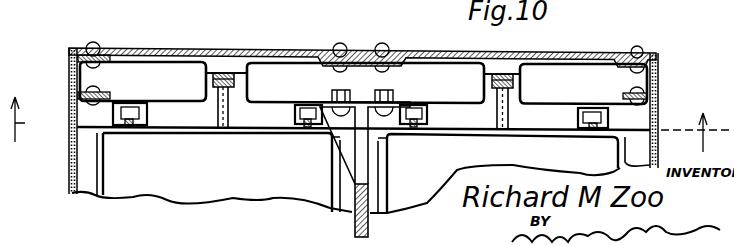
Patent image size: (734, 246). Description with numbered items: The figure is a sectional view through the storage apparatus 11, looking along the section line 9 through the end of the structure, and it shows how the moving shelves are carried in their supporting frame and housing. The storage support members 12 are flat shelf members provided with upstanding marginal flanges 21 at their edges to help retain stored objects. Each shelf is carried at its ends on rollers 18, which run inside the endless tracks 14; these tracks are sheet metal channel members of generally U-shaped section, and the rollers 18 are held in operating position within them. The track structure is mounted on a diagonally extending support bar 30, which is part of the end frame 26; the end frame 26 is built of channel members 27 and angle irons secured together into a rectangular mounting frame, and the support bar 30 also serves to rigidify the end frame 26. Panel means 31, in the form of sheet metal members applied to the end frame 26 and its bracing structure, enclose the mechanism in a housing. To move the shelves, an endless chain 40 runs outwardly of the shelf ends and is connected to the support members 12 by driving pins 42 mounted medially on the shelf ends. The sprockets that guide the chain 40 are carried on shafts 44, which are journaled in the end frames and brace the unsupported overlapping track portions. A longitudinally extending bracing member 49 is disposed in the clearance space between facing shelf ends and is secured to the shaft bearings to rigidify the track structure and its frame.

The section line 9 is at (369, 129).
The storage apparatus 11 is at (671, 95).
The storage support member 12 is at (148, 197).
The endless track 14 is at (115, 113).
The roller 18 is at (126, 103).
The marginal flange 21 is at (101, 197).
The end frame 26 is at (59, 69).
The channel member 27 is at (70, 82).
The support bar 30 is at (162, 101).
The panel means 31 is at (68, 142).
The endless chain 40 is at (219, 72).
The driving pin 42 is at (218, 120).
The shaft 44 is at (355, 188).
The bracing member 49 is at (355, 229).